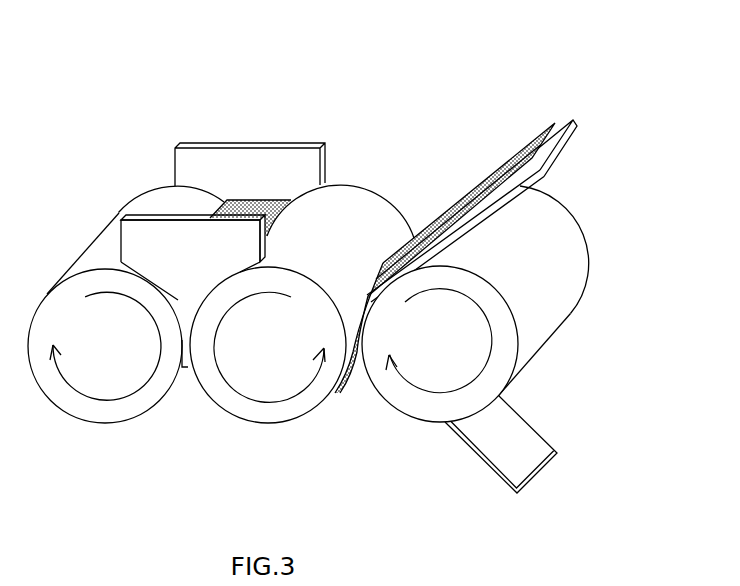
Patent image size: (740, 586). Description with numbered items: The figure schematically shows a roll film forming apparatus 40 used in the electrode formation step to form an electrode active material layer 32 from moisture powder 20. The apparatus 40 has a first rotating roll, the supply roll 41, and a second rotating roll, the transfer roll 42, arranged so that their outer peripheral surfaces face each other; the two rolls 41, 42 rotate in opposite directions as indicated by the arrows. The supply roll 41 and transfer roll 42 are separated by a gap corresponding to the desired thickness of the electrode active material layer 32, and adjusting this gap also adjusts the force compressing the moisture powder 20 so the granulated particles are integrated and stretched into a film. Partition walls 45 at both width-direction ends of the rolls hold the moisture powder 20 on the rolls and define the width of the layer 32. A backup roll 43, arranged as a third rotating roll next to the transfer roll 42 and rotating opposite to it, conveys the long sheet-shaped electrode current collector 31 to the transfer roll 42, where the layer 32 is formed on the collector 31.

The moisture powder 20 is at (247, 206).
The electrode current collector 31 is at (557, 149).
The electrode active material layer 32 is at (513, 156).
The roll film forming apparatus 40 is at (417, 68).
The first rotating roll (supply roll) 41 is at (105, 413).
The second rotating roll (transfer roll) 42 is at (272, 413).
The backup roll 43 is at (583, 238).
The partition wall 45 is at (297, 143).